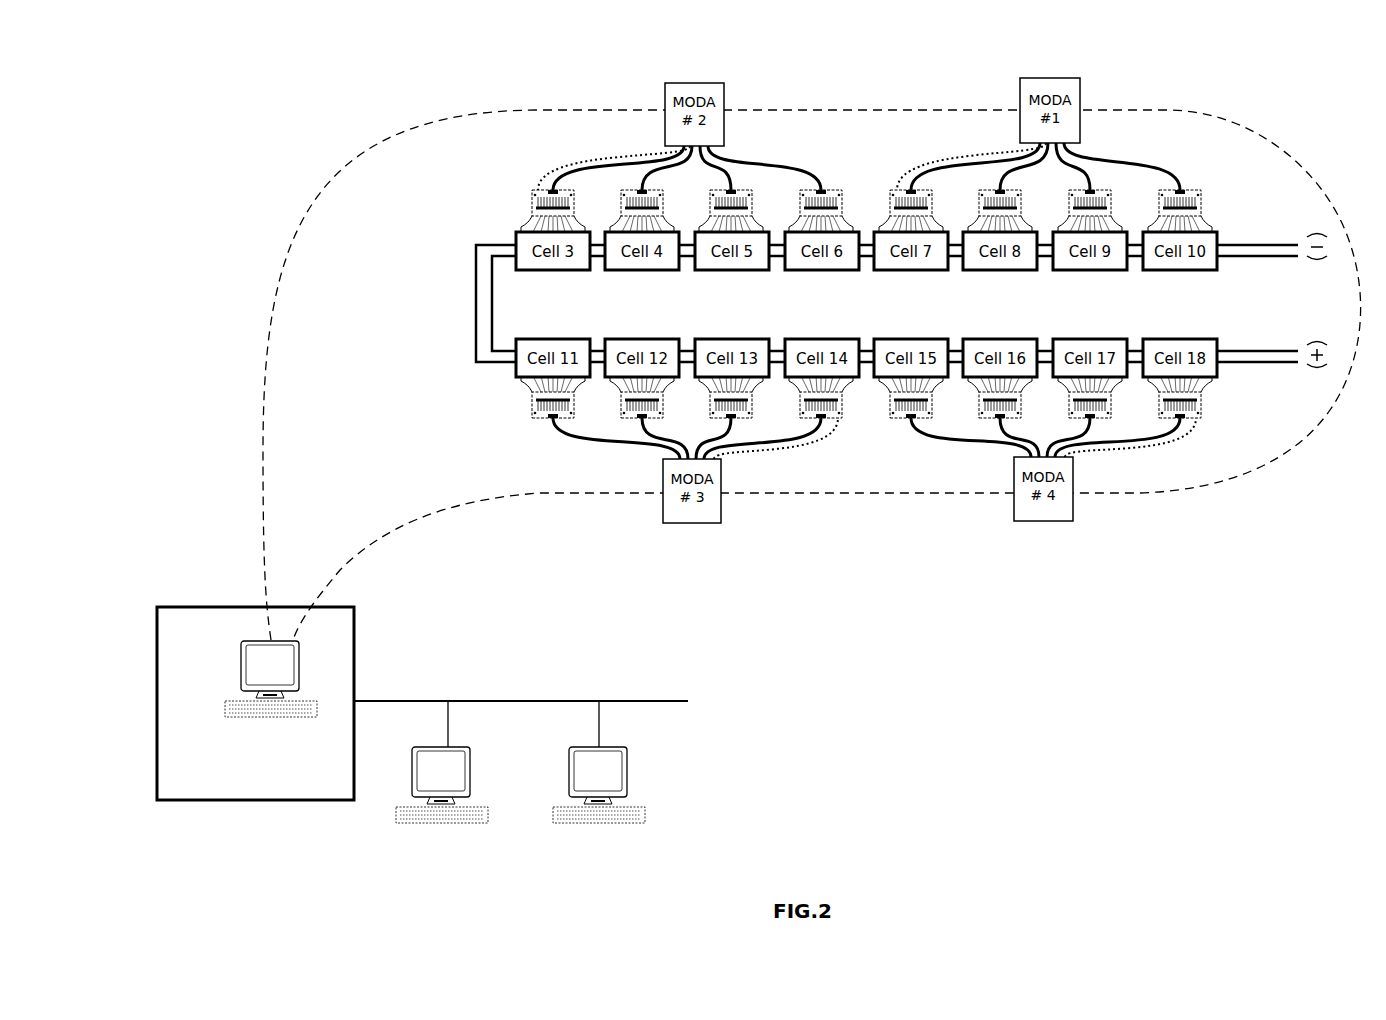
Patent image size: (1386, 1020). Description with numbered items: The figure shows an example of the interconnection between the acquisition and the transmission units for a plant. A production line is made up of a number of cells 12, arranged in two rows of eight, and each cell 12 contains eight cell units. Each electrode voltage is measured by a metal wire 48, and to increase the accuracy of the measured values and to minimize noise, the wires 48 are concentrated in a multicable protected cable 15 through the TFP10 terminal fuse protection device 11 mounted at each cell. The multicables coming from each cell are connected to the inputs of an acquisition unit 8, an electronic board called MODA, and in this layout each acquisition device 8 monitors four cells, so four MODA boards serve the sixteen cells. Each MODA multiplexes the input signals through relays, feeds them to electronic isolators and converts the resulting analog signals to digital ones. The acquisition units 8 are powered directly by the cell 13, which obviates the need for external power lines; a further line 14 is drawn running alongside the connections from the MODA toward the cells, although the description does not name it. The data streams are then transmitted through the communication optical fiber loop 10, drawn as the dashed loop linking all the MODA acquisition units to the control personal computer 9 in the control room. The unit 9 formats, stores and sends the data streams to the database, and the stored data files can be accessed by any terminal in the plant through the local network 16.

The electronic board (MODA acquisition unit) 8 is at (688, 527).
The concentration device (FOCOM control personal computer) 9 is at (359, 672).
The communication optical fiber loop 10 is at (985, 498).
The TFP10 (Terminal Fuse Protection) device 11 is at (1203, 401).
The cell 12 is at (1223, 232).
The cell (power supply to acquisition unit) 13 is at (1102, 163).
The signal line 14 is at (974, 150).
The multicable protected cable 15 is at (620, 447).
The local network 16 is at (666, 705).
The metal wire 48 is at (628, 224).